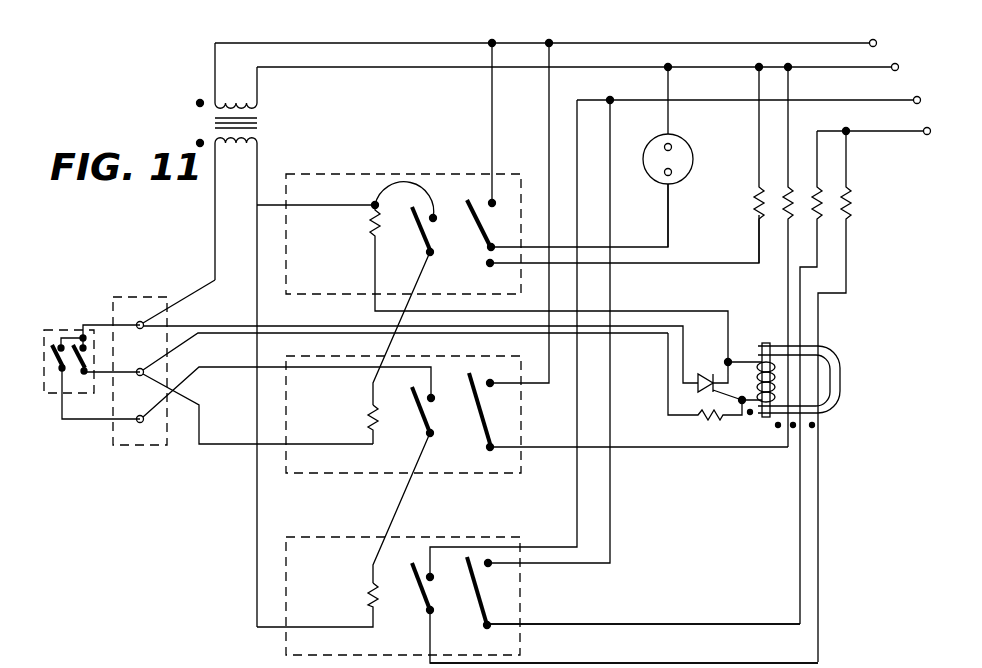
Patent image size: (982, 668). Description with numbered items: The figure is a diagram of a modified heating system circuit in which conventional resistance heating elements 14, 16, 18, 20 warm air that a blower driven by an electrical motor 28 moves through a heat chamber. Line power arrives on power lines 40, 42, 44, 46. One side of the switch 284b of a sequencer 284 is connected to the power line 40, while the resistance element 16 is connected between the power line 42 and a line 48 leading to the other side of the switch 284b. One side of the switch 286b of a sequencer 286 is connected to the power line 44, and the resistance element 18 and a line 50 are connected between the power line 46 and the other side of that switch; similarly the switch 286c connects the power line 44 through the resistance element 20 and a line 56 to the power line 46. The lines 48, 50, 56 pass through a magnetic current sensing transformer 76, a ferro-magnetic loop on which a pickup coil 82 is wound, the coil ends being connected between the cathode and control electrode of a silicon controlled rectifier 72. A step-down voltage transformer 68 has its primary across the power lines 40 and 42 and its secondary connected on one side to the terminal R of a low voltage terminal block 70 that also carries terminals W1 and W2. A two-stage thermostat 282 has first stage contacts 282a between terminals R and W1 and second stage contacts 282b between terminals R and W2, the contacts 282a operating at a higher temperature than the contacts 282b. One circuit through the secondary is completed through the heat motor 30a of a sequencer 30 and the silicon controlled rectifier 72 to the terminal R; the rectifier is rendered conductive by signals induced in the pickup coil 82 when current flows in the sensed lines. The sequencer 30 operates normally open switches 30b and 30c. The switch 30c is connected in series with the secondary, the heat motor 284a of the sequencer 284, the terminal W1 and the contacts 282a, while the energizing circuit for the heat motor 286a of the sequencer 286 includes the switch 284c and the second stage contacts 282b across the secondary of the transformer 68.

The electrical resistance heating element 14 is at (756, 203).
The electrical resistance heating element 16 is at (785, 208).
The electrical resistance heating element 18 is at (820, 197).
The electrical resistance heating element 20 is at (848, 206).
The electrical motor 28 is at (681, 154).
The sequencer 30 is at (508, 224).
The heat motor 30a is at (368, 240).
The normally open switch 30b is at (492, 218).
The normally open switch 30c is at (438, 215).
The power line 40 is at (850, 43).
The power line 42 is at (838, 70).
The power line 44 is at (856, 85).
The power line 46 is at (877, 134).
The line 48 is at (683, 448).
The line 50 is at (695, 622).
The line 56 is at (705, 663).
The step-down voltage transformer 68 is at (260, 110).
The low voltage terminal block 70 is at (113, 297).
The silicon controlled rectifier 72 is at (705, 372).
The magnetic current sensing transformer 76 is at (846, 382).
The pickup coil 82 is at (758, 366).
The thermostat 282 is at (92, 391).
The first stage contacts 282a is at (72, 384).
The second stage contacts 282b is at (48, 384).
The sequencer 284 is at (537, 313).
The heat motor 284a is at (384, 436).
The switch 284b is at (497, 421).
The switch 284c is at (445, 424).
The sequencer 286 is at (509, 383).
The heat motor 286a is at (385, 586).
The switch 286b is at (496, 598).
The switch 286c is at (412, 604).
The terminal R is at (152, 322).
The terminal W1 is at (150, 369).
The terminal W2 is at (144, 422).